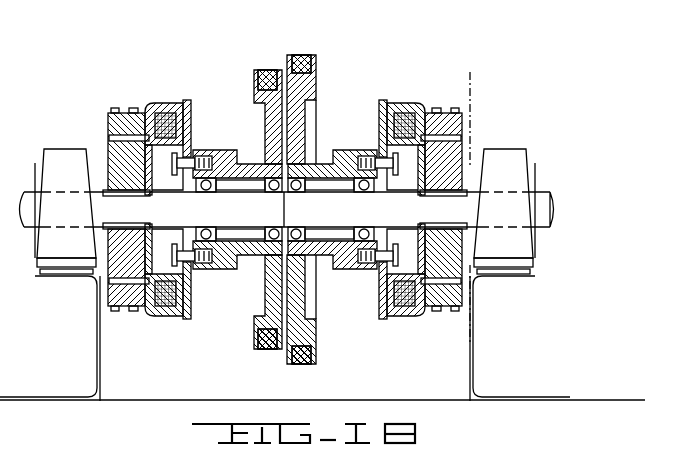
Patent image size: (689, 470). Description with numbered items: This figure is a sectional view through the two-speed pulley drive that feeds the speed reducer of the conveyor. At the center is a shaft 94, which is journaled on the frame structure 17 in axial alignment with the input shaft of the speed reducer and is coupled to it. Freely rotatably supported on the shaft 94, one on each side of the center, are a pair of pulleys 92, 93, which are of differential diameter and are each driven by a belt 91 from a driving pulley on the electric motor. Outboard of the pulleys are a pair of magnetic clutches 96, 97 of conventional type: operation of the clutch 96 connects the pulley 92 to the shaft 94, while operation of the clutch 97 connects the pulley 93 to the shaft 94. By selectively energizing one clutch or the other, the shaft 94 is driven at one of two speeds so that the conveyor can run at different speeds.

The support frame / section line 17 is at (481, 86).
The belt 91 is at (298, 54).
The pulley 92 is at (308, 93).
The pulley 93 is at (262, 117).
The shaft 94 is at (552, 207).
The magnetic clutch 96 is at (403, 103).
The magnetic clutch 97 is at (168, 100).